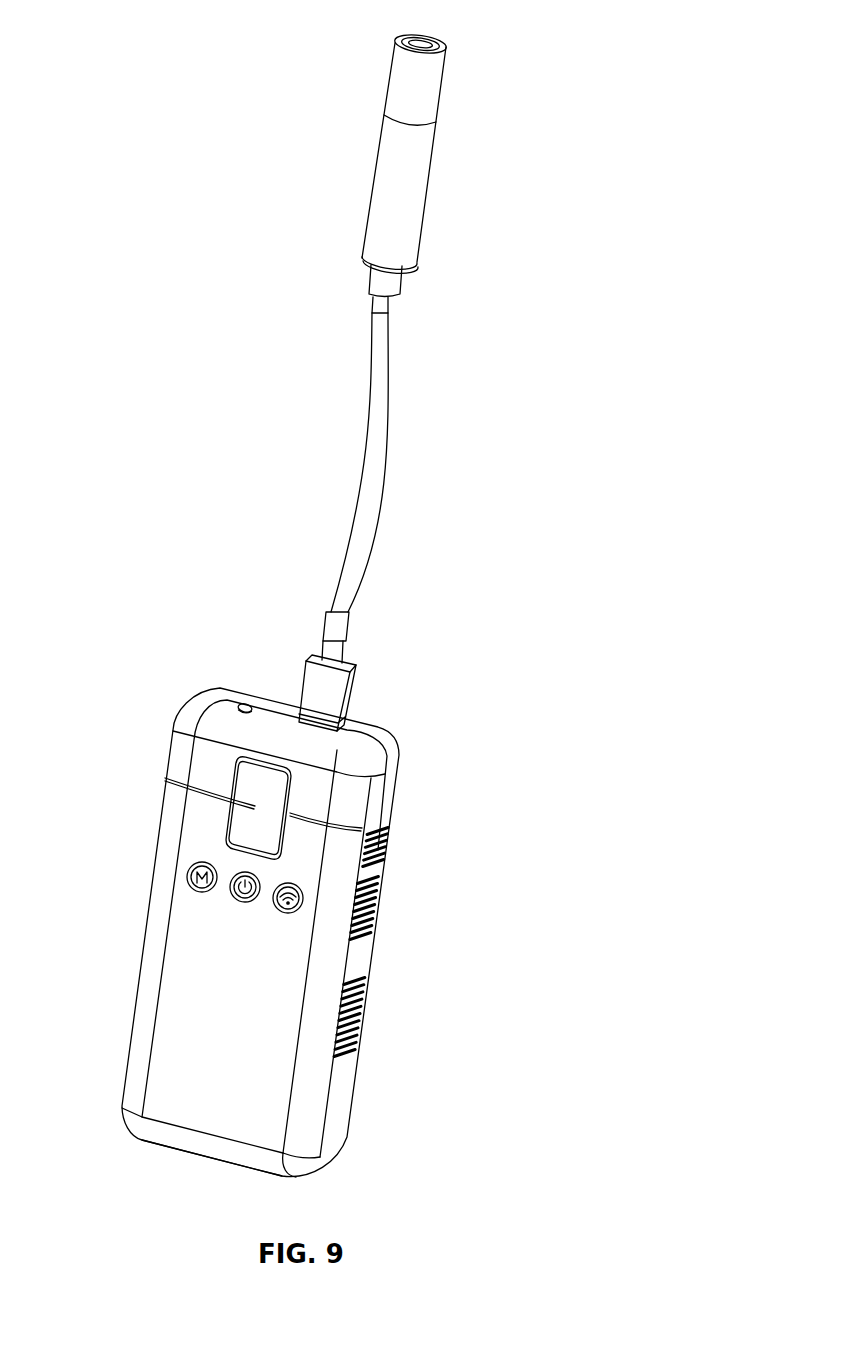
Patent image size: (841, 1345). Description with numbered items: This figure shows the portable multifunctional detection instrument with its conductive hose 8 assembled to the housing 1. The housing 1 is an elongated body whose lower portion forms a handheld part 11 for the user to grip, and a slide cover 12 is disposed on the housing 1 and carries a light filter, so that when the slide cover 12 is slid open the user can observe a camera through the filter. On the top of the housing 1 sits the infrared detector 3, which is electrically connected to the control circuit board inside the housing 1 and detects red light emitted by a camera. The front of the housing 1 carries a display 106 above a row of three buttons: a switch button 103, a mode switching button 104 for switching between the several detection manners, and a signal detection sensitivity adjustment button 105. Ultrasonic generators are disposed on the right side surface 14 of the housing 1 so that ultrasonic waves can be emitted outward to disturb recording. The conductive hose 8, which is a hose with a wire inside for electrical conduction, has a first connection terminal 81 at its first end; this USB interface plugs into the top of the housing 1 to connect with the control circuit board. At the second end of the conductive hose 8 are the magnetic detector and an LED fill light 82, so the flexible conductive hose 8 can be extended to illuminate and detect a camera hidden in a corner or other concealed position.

The housing 1 is at (215, 1045).
The infrared detector 3 is at (243, 704).
The conductive hose 8 is at (383, 437).
The first connection terminal 81 is at (330, 693).
The LED fill light 82 is at (395, 42).
The handheld part 11 is at (411, 978).
The slide cover 12 is at (388, 788).
The right side surface 14 is at (338, 1090).
The switch button 103 is at (235, 895).
The mode switching button 104 is at (187, 877).
The signal detection sensitivity adjustment button 105 is at (300, 894).
The display 106 is at (250, 781).